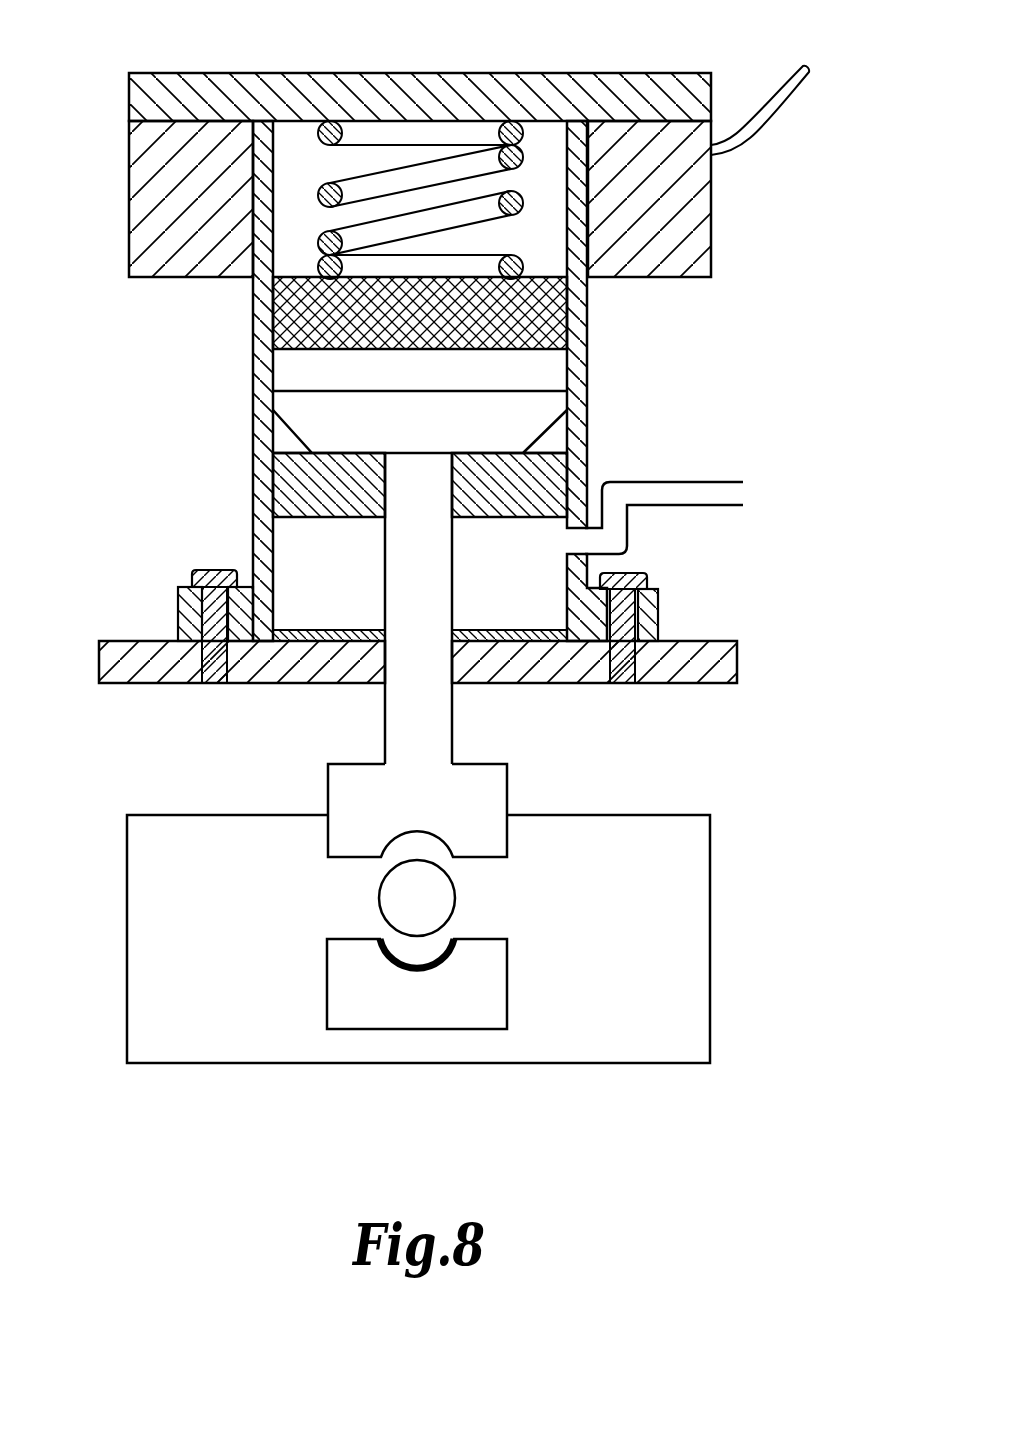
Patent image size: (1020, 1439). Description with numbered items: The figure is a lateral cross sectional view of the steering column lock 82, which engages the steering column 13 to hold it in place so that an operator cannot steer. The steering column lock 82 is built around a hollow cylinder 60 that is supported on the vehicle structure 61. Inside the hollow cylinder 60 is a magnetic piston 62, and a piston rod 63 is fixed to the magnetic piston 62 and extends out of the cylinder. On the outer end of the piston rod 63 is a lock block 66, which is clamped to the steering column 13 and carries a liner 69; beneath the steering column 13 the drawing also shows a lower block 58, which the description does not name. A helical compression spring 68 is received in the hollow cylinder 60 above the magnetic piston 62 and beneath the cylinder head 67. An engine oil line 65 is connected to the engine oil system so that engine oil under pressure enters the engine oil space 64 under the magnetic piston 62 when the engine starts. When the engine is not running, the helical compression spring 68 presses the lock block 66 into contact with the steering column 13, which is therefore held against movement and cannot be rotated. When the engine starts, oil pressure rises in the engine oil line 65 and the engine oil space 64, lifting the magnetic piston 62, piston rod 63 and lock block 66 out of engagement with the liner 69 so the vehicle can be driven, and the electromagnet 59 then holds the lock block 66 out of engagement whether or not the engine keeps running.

The steering column 13 is at (440, 893).
The lower clamp block 58 is at (478, 995).
The electromagnet 59 is at (693, 180).
The hollow cylinder 60 is at (260, 356).
The vehicle structure 61 is at (127, 641).
The magnetic piston 62 is at (543, 323).
The piston rod 63 is at (413, 733).
The engine oil space 64 is at (522, 592).
The engine oil line 65 is at (682, 493).
The lock block 66 is at (348, 793).
The cylinder head 67 is at (255, 73).
The helical compression spring 68 is at (378, 183).
The liner 69 is at (405, 955).
The steering column lock 82 is at (745, 569).